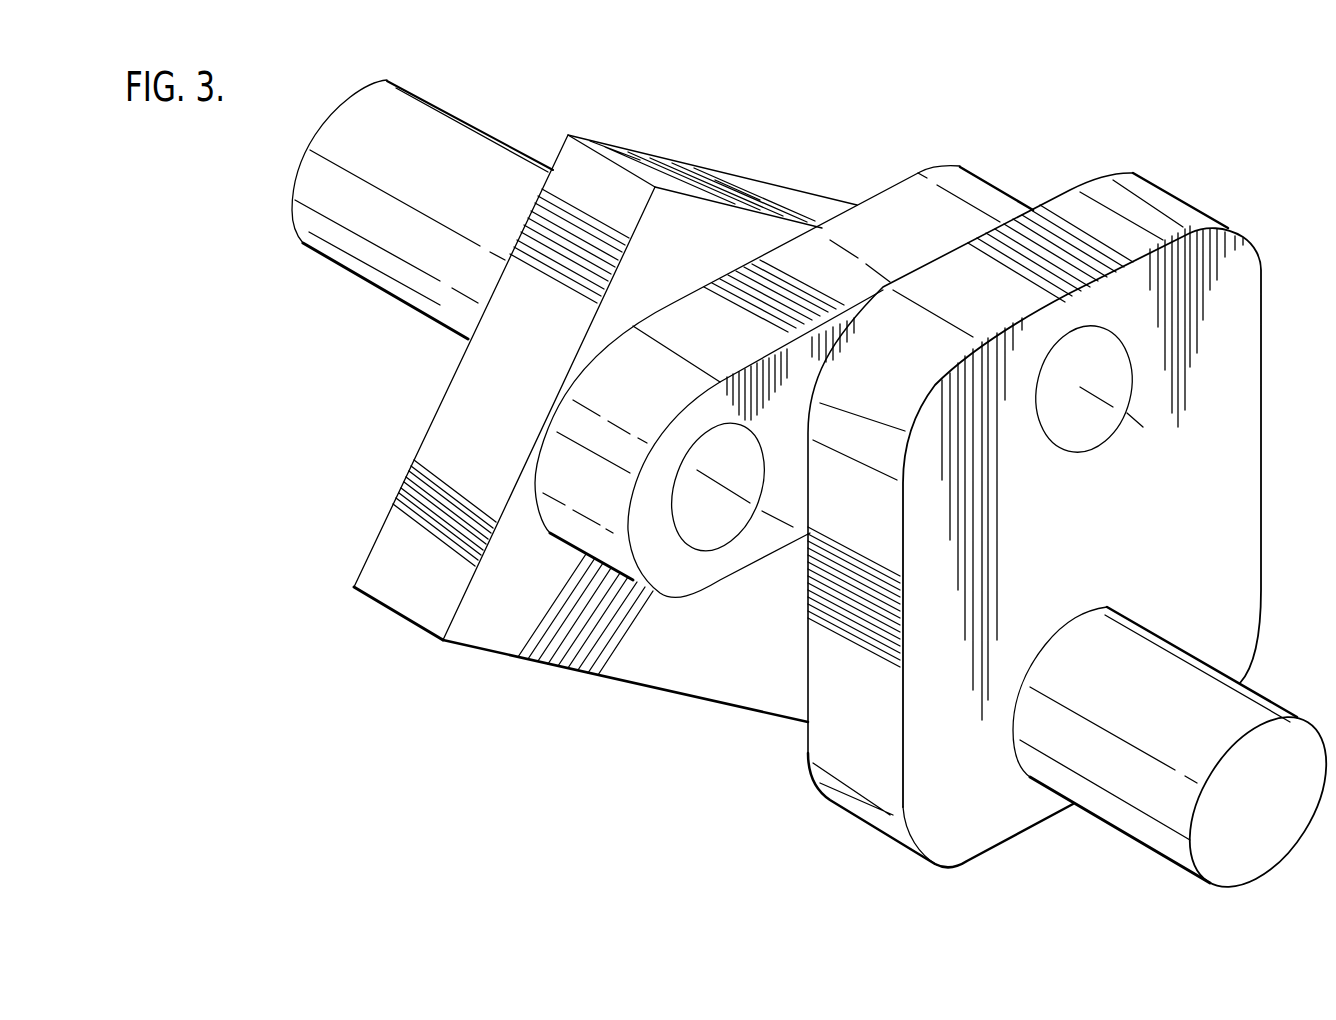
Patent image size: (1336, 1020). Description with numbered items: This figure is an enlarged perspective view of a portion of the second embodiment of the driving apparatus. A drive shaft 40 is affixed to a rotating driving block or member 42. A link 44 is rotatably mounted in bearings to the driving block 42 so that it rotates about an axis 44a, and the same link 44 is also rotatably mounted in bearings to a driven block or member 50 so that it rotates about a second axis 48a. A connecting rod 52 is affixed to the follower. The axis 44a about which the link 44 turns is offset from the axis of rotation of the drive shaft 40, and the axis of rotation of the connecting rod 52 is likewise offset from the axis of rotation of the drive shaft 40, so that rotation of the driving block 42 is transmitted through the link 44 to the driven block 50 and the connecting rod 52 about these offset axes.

The drive shaft 40 is at (1203, 655).
The rotating driving block 42 is at (1163, 195).
The link 44 is at (883, 222).
The axis of rotation of the link 44a is at (830, 238).
The axis of rotation of the link in the driven block 48a is at (547, 437).
The driven block 50 is at (400, 525).
The connecting rod 52 is at (466, 137).